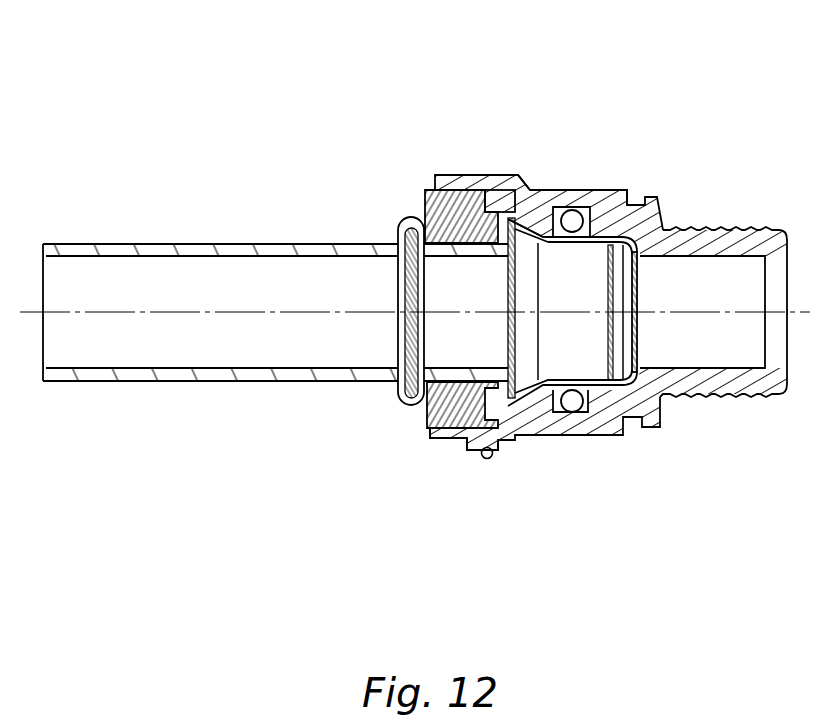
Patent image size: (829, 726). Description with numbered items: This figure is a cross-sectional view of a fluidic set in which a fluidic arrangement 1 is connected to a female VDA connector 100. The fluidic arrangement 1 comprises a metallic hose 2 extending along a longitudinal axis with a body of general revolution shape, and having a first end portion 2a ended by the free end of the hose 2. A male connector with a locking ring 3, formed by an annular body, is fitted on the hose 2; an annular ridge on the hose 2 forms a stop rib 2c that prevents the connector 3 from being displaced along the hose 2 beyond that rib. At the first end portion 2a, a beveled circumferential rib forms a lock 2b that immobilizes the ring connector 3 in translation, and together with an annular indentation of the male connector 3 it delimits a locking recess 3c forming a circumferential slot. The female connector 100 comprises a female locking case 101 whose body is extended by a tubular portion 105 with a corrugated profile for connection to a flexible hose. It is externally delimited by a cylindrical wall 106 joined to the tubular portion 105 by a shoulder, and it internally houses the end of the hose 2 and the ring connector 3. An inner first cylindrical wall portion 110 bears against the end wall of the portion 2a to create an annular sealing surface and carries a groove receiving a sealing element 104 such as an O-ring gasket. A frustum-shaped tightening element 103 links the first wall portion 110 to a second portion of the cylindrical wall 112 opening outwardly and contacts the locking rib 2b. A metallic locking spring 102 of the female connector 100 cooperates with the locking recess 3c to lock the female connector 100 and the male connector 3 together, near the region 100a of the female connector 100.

The fluidic arrangement 1 is at (285, 522).
The hose 2 is at (183, 390).
The first end portion 2a is at (635, 258).
The lock 2b is at (529, 395).
The stop rib 2c is at (407, 220).
The male connector with a locking ring 3 is at (442, 208).
The locking recess 3c is at (487, 406).
The female connector 100 is at (645, 463).
The connector body end 100a is at (392, 413).
The female locking case 101 is at (614, 200).
The locking spring 102 is at (489, 458).
The tightening element 103 is at (531, 220).
The sealing element 104 is at (584, 214).
The tubular portion 105 is at (717, 232).
The cylindrical wall 106 is at (571, 209).
The first cylindrical wall portion 110 is at (594, 233).
The second portion of the cylindrical wall 112 is at (468, 186).